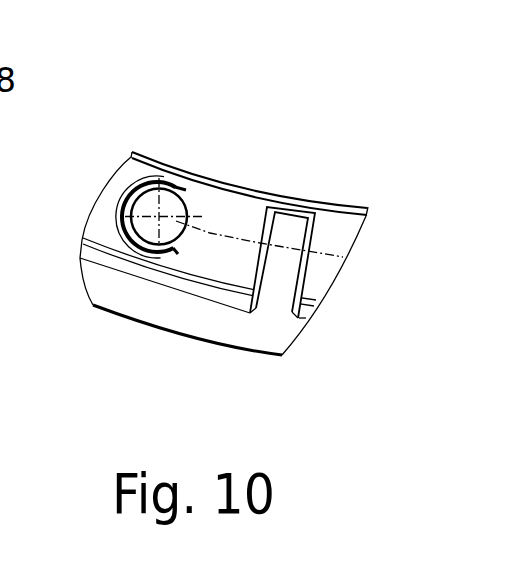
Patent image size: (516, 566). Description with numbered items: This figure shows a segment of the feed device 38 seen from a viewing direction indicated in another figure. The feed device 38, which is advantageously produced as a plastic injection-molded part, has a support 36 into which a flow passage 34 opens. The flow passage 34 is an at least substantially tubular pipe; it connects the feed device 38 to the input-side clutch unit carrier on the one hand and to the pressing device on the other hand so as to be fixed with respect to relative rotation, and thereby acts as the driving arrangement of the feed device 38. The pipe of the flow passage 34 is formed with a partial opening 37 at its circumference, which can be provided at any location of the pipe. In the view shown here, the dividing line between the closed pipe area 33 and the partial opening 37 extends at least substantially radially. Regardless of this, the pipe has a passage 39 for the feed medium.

The closed pipe area 33 is at (95, 253).
The flow passage 34 is at (152, 252).
The support 36 is at (265, 335).
The partial opening 37 is at (178, 184).
The feed device 38 is at (302, 146).
The passage 39 is at (159, 215).